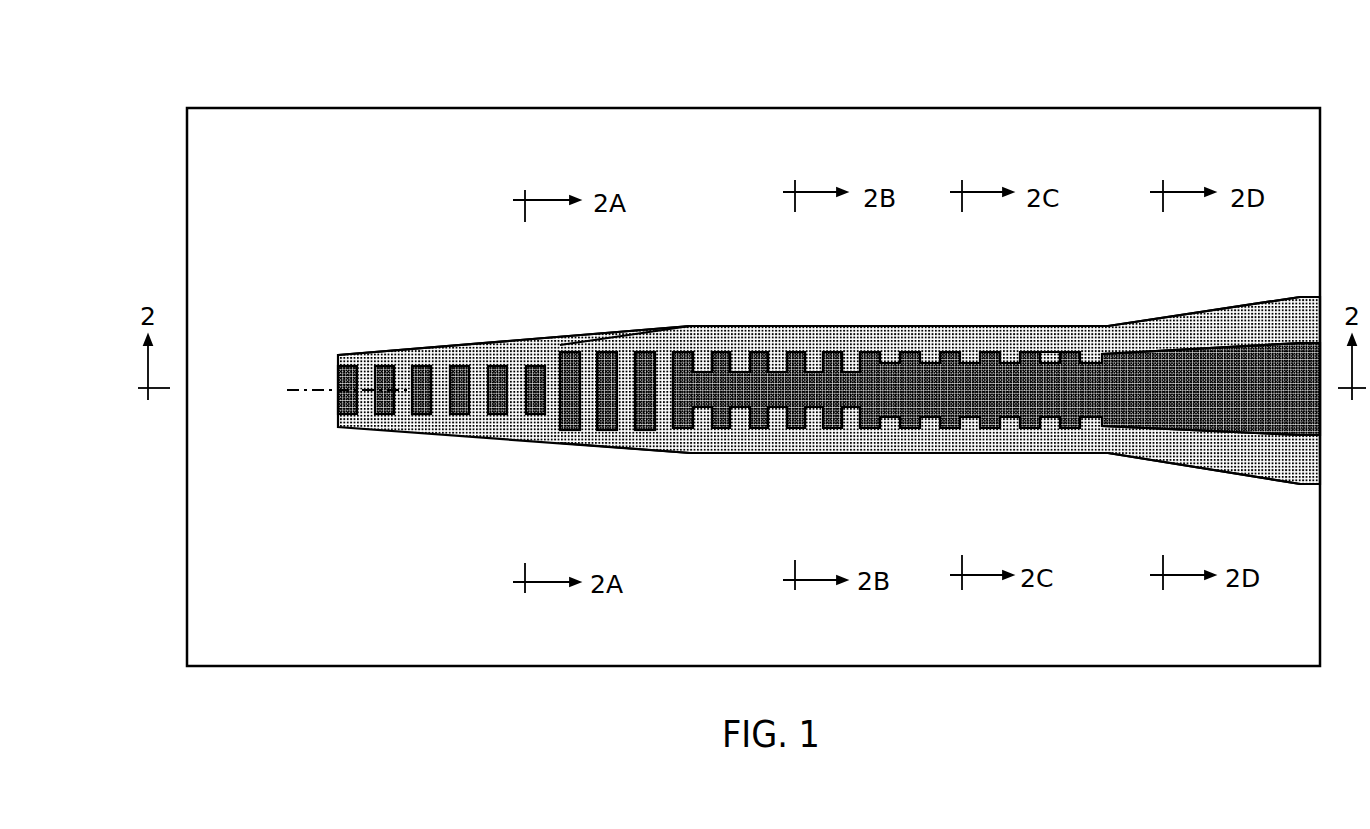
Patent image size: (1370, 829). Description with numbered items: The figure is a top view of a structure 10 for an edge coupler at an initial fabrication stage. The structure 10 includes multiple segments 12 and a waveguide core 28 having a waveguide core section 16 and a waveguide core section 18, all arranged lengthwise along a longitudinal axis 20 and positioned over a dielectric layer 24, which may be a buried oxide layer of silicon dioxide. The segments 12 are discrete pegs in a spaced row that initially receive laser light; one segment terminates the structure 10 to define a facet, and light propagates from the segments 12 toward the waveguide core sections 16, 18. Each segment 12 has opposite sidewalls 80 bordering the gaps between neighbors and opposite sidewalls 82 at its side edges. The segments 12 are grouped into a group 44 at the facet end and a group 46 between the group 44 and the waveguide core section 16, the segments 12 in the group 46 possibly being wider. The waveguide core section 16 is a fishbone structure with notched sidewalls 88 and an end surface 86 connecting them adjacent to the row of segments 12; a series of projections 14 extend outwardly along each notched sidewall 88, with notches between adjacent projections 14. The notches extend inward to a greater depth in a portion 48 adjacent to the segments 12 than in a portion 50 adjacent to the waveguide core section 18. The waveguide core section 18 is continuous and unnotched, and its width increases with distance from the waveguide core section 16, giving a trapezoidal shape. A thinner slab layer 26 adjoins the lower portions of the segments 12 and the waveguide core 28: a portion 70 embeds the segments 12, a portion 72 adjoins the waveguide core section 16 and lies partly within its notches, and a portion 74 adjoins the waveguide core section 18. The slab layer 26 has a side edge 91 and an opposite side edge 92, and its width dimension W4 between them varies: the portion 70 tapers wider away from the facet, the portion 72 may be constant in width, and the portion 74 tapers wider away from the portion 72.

The structure 10 is at (310, 205).
The segments 12 is at (502, 388).
The projections 14 is at (720, 362).
The waveguide core section 16 is at (855, 390).
The waveguide core section 18 is at (1180, 388).
The longitudinal axis 20 is at (320, 388).
The dielectric layer 24 is at (253, 639).
The slab layer 26 is at (553, 325).
The waveguide core 28 is at (993, 343).
The group 44 is at (338, 90).
The group 46 is at (562, 90).
The portion 48 is at (677, 90).
The portion 50 is at (880, 90).
The portion 70 is at (432, 366).
The portion 72 is at (778, 352).
The portion 74 is at (1212, 335).
The sidewalls 80 is at (398, 377).
The sidewalls 82 is at (422, 415).
The end surface 86 is at (673, 398).
The notched sidewalls 88 is at (852, 372).
The side edge 91 is at (648, 325).
The side edge 92 is at (690, 455).
The width dimension W4 is at (907, 275).